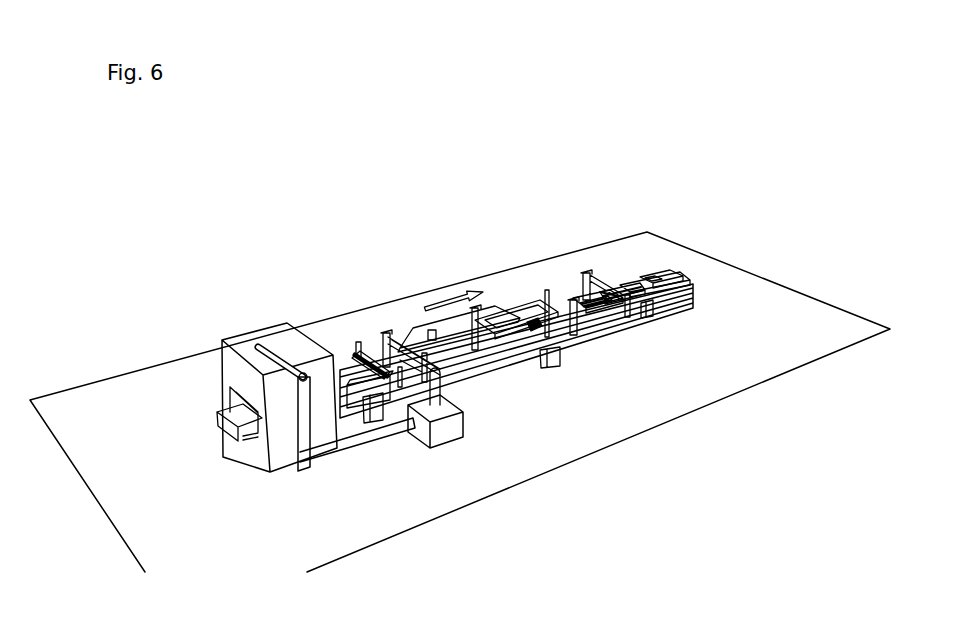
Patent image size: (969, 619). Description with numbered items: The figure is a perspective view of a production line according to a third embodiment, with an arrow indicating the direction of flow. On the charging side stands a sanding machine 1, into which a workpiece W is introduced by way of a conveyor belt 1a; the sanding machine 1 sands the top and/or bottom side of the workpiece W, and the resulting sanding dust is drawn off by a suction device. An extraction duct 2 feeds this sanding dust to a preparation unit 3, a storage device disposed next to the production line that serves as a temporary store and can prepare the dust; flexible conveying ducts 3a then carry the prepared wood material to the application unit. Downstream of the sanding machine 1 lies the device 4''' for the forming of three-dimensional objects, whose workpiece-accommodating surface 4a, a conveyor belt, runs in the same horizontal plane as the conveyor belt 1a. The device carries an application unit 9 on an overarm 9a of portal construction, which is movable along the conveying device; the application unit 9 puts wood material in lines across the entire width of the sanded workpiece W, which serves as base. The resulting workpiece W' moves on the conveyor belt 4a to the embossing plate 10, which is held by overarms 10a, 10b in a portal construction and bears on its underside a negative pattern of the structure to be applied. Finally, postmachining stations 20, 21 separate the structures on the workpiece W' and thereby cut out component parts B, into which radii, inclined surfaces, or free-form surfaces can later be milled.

The sanding machine 1 is at (281, 338).
The conveyor belt 1a is at (237, 424).
The extraction duct 2 is at (327, 454).
The preparation unit 3 is at (443, 432).
The conveying duct 3a is at (414, 429).
The device for the forming of three-dimensional objects 4''' is at (516, 396).
The workpiece-accommodating surface 4a is at (565, 328).
The application unit 9 is at (380, 333).
The overarm 9a is at (360, 343).
The embossing plate 10 is at (475, 308).
The overarm 10a is at (432, 330).
The overarm 10b is at (497, 315).
The postmachining station 20 is at (577, 336).
The postmachining station 21 is at (628, 321).
The component part B is at (657, 268).
The workpiece W is at (365, 297).
The workpiece with added three-dimensional structure W' is at (540, 248).